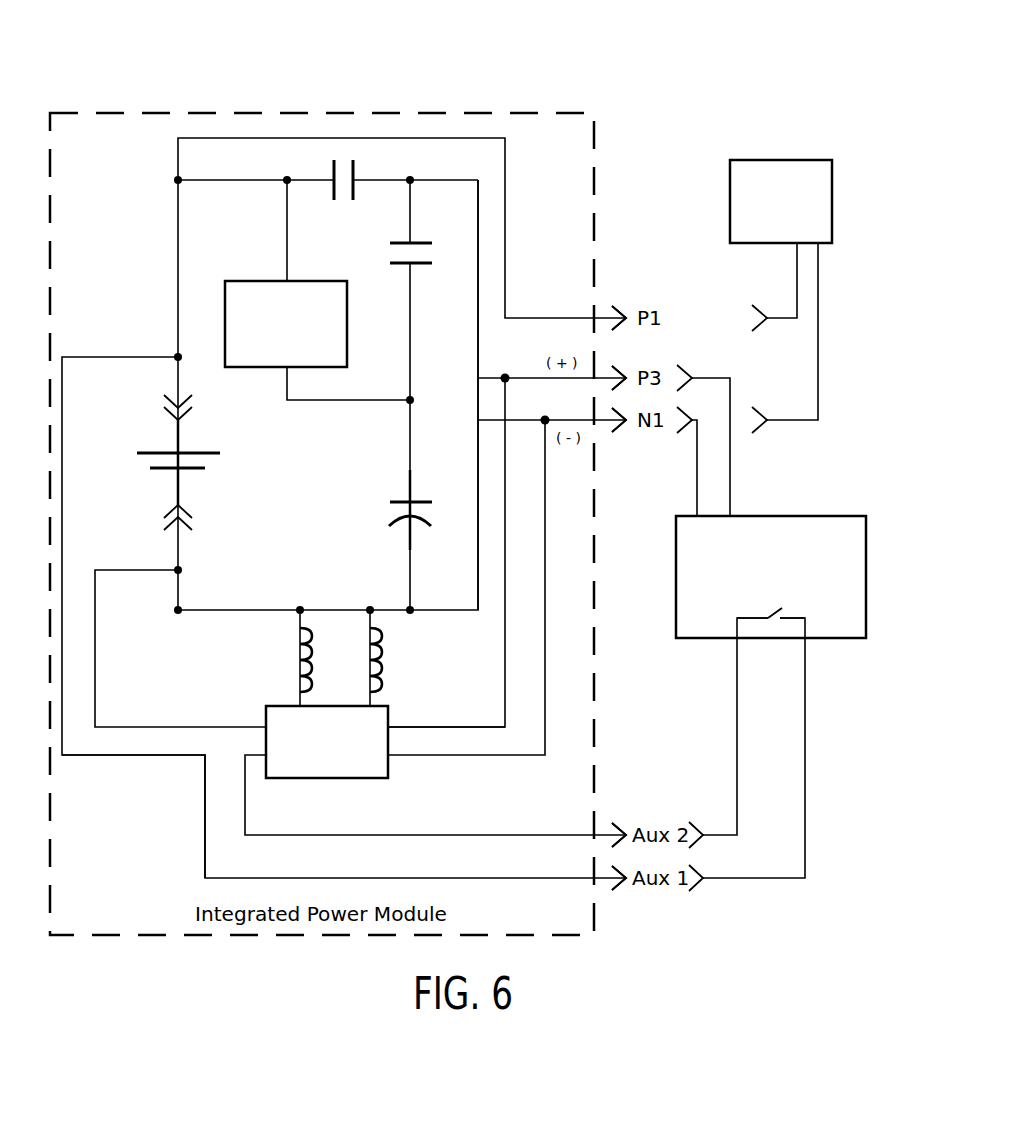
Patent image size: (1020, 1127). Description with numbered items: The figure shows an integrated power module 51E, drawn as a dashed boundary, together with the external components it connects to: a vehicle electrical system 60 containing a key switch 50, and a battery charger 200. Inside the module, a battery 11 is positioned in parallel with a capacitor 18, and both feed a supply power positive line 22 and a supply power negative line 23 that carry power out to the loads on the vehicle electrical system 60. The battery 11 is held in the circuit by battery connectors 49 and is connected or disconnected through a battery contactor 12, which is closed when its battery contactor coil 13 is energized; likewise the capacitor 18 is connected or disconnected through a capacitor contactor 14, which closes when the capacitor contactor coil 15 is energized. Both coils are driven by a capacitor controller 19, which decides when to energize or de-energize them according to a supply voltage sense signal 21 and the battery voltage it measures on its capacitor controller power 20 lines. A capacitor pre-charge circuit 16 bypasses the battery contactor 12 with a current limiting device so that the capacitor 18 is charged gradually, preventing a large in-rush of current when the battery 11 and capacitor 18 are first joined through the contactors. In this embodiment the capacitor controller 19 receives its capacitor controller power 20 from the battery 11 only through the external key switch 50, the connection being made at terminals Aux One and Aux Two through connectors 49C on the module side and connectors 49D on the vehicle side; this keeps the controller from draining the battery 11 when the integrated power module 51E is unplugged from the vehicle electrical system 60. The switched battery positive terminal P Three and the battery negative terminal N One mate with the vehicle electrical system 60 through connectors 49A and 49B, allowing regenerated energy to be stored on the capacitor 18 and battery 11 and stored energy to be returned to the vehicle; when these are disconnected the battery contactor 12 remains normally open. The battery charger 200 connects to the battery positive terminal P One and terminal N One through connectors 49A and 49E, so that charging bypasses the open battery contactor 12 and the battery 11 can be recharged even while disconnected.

The integrated power module 51E is at (530, 95).
The battery 11 is at (162, 446).
The battery contactor 12 is at (330, 160).
The battery contactor coil 13 is at (290, 655).
The capacitor contactor 14 is at (392, 254).
The capacitor contactor coil 15 is at (385, 652).
The capacitor pre-charge circuit 16 is at (252, 280).
The capacitor 18 is at (392, 500).
The capacitor controller 19 is at (333, 780).
The capacitor controller power 20 is at (188, 760).
The supply voltage sense signal 21 is at (480, 725).
The supply power positive line 22 is at (476, 312).
The supply power negative line 23 is at (477, 460).
The battery connectors 49 is at (162, 400).
The connectors 49A is at (613, 305).
The connectors 49B is at (684, 364).
The connectors 49C is at (615, 820).
The connectors 49D is at (693, 820).
The connectors 49E is at (758, 305).
The key switch 50 is at (746, 612).
The vehicle electrical system 60 is at (692, 642).
The battery charger 200 is at (760, 158).